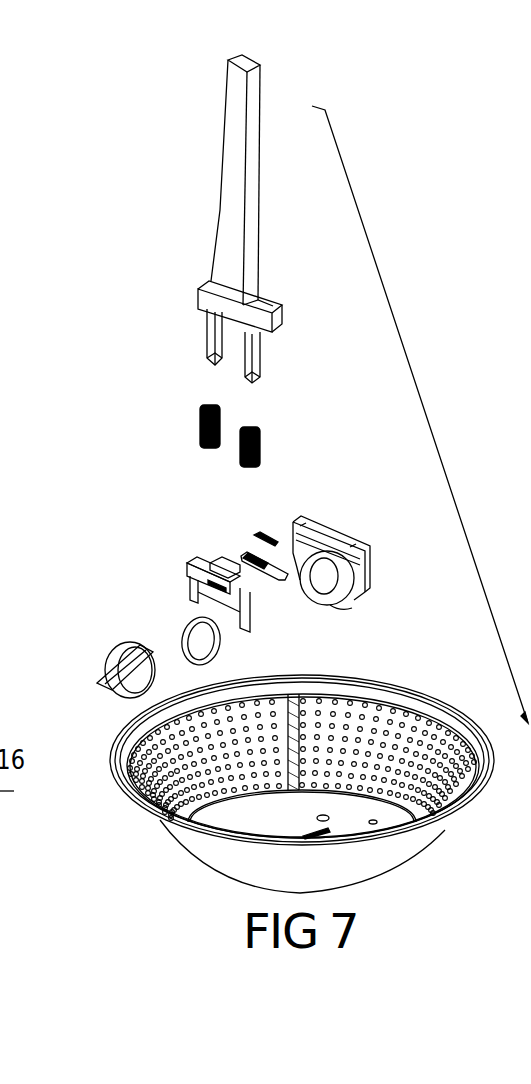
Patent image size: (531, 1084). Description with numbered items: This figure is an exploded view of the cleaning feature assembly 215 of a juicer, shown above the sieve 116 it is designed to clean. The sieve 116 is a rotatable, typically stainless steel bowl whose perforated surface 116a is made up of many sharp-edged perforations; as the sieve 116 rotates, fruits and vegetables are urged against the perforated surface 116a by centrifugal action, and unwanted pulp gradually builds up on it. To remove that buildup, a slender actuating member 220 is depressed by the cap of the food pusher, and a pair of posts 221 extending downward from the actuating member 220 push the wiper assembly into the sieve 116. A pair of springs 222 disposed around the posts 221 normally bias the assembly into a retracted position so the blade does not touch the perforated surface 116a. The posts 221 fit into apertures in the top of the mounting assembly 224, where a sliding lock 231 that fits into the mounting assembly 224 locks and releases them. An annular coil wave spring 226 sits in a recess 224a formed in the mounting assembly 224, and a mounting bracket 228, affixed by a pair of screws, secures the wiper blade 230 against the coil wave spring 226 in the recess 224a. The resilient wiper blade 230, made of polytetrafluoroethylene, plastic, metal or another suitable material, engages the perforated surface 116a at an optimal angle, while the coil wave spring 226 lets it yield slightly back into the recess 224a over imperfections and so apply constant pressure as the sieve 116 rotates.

The sieve 116 is at (311, 768).
The perforated surface 116a is at (420, 733).
The cleaning feature assembly 215 is at (425, 410).
The actuating member 220 is at (252, 177).
The posts 221 is at (209, 340).
The springs 222 is at (200, 427).
The mounting assembly 224 is at (372, 575).
The recess 224a is at (352, 612).
The annular coil wave spring 226 is at (183, 640).
The mounting bracket 228 is at (189, 572).
The wiper blade 230 is at (97, 683).
The sliding lock 231 is at (245, 567).